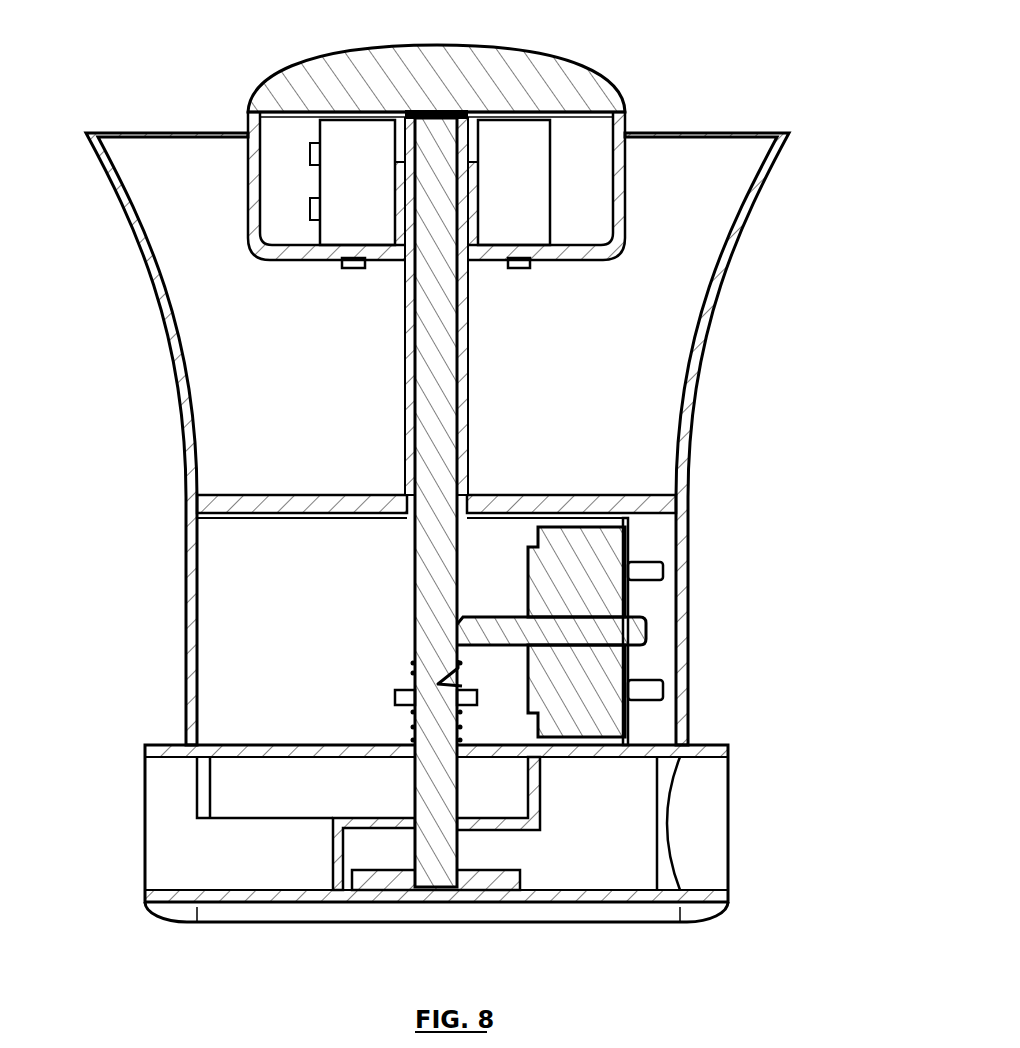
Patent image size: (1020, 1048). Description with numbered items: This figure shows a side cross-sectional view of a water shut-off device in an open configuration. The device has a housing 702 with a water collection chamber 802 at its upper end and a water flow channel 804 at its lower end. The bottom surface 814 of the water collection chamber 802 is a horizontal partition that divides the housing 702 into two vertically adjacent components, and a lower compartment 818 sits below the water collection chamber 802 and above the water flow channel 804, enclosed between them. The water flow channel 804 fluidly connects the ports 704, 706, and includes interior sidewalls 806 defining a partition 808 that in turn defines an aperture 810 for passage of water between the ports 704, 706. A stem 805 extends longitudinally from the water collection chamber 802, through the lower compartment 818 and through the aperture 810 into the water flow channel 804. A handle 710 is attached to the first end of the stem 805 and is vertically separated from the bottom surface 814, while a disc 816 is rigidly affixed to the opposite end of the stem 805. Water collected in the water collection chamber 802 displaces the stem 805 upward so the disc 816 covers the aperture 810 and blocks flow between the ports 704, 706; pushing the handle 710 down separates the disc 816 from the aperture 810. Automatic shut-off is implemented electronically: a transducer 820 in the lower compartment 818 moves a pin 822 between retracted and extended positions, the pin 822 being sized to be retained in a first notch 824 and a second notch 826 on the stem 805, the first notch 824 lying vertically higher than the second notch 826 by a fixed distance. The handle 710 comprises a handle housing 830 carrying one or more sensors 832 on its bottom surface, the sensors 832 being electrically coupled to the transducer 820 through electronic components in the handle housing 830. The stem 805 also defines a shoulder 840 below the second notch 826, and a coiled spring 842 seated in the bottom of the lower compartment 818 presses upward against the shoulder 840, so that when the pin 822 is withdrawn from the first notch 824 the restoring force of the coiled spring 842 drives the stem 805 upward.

The housing 702 is at (738, 205).
The port 704 is at (712, 745).
The port 706 is at (158, 910).
The handle 710 is at (297, 78).
The water collection chamber 802 is at (175, 205).
The water flow channel 804 is at (712, 865).
The stem 805 is at (468, 420).
The interior sidewall 806 is at (345, 855).
The partition 808 is at (528, 830).
The aperture 810 is at (467, 870).
The bottom surface of the water collection chamber 814 is at (630, 497).
The disc 816 is at (428, 890).
The lower compartment 818 is at (222, 542).
The transducer 820 is at (600, 680).
The pin 822 is at (518, 608).
The first notch 824 is at (440, 637).
The second notch 826 is at (413, 683).
The handle housing 830 is at (603, 147).
The sensor 832 is at (352, 268).
The shoulder 840 is at (467, 697).
The coiled spring 842 is at (411, 730).